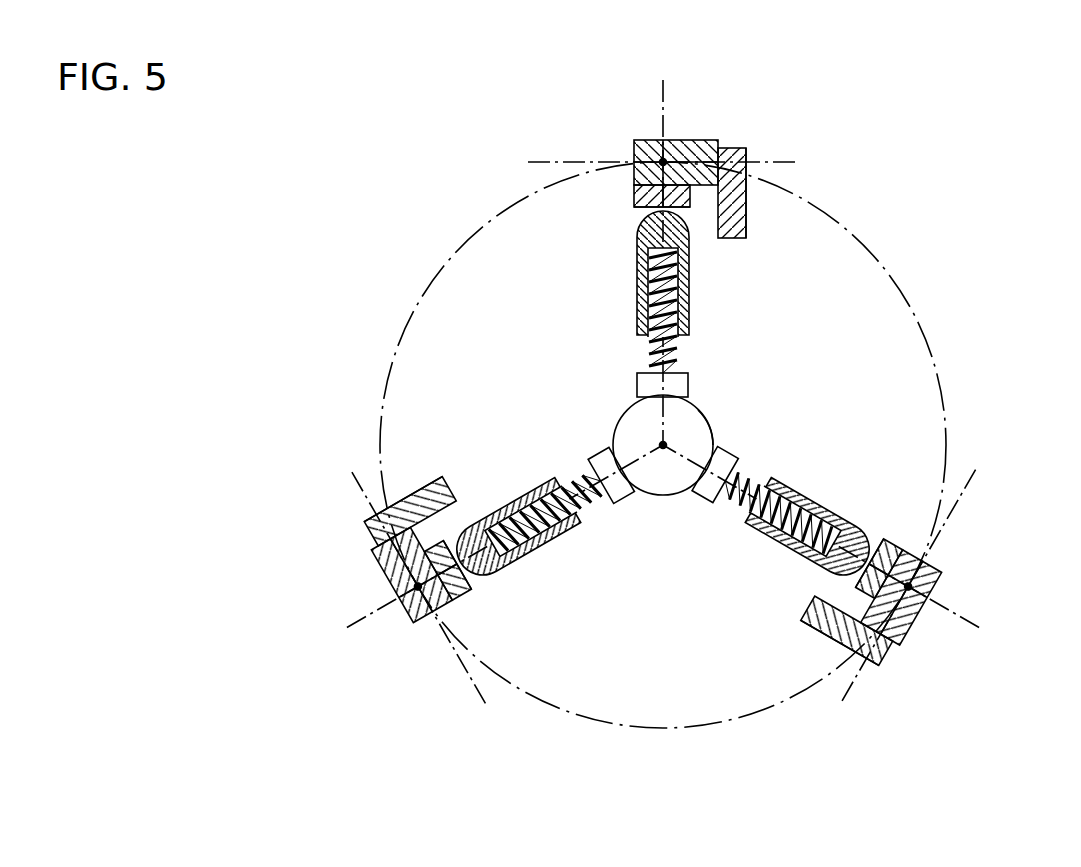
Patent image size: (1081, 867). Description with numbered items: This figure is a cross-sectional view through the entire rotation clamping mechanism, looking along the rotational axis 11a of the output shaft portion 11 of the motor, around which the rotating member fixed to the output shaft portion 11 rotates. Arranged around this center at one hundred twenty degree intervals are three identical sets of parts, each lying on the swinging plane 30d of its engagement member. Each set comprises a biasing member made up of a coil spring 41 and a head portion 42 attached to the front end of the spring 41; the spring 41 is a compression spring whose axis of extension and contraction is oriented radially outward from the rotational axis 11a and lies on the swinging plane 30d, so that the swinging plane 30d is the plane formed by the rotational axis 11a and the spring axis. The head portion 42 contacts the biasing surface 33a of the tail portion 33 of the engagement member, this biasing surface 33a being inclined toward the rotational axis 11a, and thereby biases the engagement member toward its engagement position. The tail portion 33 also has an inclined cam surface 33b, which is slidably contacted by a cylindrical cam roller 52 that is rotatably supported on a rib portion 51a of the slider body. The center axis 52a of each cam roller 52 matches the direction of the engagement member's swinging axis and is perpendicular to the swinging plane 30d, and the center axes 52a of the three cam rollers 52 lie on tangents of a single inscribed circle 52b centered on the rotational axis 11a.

The output shaft portion 11 is at (715, 420).
The rotational axis 11a is at (718, 438).
The swinging plane 30d is at (643, 458).
The tail portion 33 is at (635, 192).
The biasing surface 33a is at (641, 213).
The cam surface 33b is at (633, 160).
The coil spring 41 is at (668, 320).
The head portion 42 is at (683, 217).
The rib portion 51a is at (747, 207).
The cam roller 52 is at (688, 140).
The center axis 52a is at (793, 160).
The inscribed circle 52b is at (917, 320).